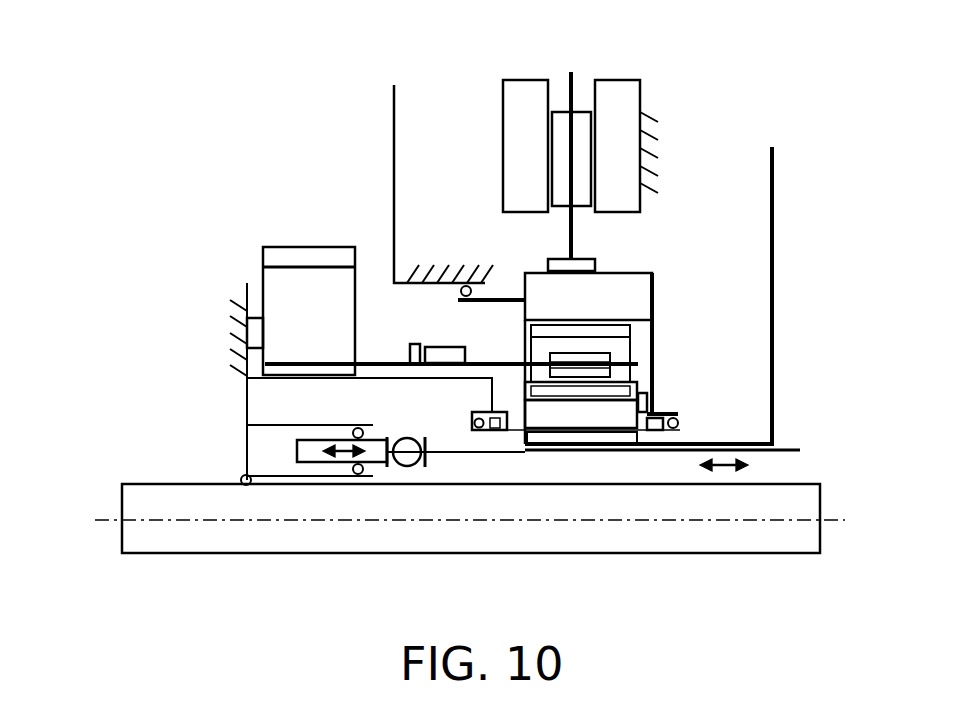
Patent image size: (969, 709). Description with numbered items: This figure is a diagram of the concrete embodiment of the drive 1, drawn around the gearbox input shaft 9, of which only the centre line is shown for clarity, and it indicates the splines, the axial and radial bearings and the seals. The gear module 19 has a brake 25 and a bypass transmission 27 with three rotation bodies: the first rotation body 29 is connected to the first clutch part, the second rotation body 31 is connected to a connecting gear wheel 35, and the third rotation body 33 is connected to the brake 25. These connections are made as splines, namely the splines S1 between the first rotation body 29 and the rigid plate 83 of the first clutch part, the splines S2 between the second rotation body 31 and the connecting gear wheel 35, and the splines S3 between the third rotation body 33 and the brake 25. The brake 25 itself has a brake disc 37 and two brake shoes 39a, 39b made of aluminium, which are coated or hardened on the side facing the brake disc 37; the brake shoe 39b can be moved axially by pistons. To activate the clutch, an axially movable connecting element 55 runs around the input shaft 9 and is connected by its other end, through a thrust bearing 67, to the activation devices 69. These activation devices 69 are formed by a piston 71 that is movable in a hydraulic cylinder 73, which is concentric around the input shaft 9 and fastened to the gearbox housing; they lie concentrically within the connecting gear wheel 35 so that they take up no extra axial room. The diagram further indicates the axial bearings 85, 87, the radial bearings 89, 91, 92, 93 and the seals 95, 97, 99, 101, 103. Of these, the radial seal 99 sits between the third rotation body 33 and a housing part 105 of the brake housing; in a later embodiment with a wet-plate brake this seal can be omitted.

The apparatus 1 is at (187, 157).
The gearbox input shaft 9 is at (233, 540).
The gear module 19 is at (697, 165).
The brake 25 is at (598, 72).
The bypass transmission 27 is at (643, 268).
The first rotation body 29 is at (572, 408).
The second rotation body 31 is at (633, 361).
The third rotation body 33 is at (630, 300).
The connecting gear wheel 35 is at (305, 258).
The brake disc 37 is at (571, 154).
The brake shoe 39a is at (627, 97).
The brake shoe 39b is at (515, 108).
The connecting element 55 is at (792, 450).
The thrust bearing 67 is at (407, 448).
The activation devices 69 is at (242, 446).
The piston 71 is at (315, 438).
The hydraulic cylinder 73 is at (277, 425).
The rigid plate 83 is at (775, 253).
The axial bearing 85 is at (248, 330).
The axial bearing 87 is at (653, 402).
The radial bearing 89 is at (280, 368).
The radial bearing 91 is at (500, 432).
The radial bearing 92 is at (560, 357).
The radial bearing 93 is at (655, 430).
The seal 95 is at (241, 478).
The seal 97 is at (358, 474).
The radial seal 99 is at (460, 292).
The seal 101 is at (473, 418).
The seal 103 is at (673, 430).
The housing part 105 is at (394, 168).
The splines S1 is at (580, 436).
The splines S2 is at (455, 350).
The splines S3 is at (546, 262).